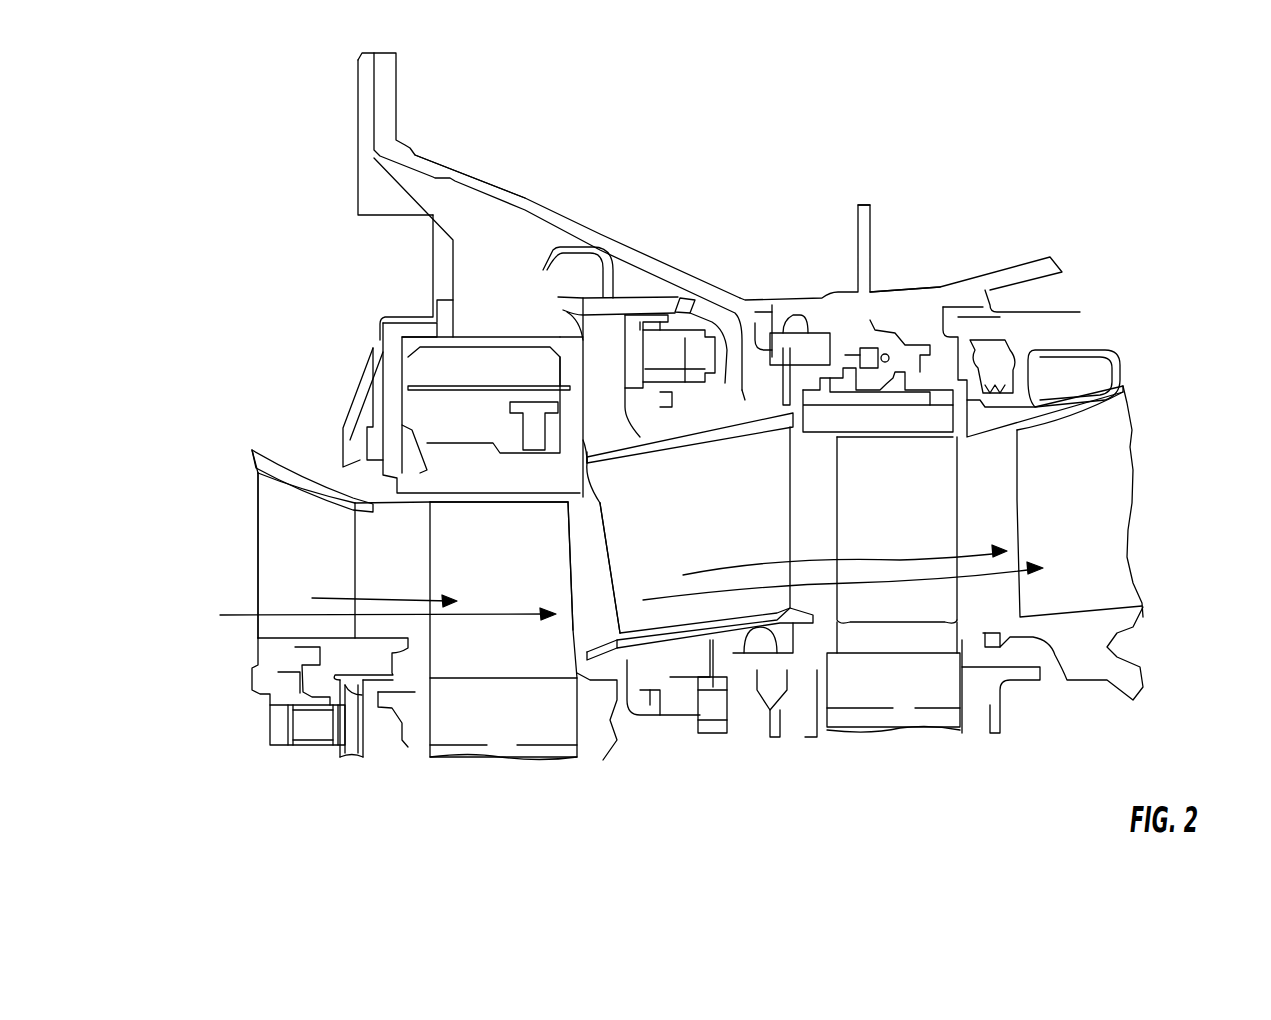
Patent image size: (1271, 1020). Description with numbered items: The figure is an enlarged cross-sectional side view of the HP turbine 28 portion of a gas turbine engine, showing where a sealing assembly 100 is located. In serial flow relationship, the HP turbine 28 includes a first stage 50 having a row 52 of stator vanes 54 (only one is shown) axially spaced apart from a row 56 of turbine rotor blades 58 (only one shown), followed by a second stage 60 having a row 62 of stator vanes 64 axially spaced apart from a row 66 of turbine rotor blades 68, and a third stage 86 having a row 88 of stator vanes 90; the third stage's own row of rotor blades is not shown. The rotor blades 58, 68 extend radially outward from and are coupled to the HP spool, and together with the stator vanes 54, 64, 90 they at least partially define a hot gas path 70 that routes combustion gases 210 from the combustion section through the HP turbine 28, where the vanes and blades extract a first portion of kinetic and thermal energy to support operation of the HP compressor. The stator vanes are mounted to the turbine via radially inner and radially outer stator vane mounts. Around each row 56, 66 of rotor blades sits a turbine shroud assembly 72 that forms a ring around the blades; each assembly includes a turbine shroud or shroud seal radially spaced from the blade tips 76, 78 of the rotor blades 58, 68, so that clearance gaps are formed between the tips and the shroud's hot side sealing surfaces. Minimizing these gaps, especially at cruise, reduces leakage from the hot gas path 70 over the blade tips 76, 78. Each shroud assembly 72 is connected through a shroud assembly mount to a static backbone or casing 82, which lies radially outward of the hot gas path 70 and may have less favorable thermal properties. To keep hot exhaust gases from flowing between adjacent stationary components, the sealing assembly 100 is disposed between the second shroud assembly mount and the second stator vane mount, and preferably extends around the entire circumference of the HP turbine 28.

The HP turbine 28 is at (790, 152).
The casing 82 is at (541, 196).
The turbine shroud assembly 72 is at (525, 326).
The sealing assembly 100 is at (360, 437).
The row of stator vanes 88 is at (1135, 430).
The blade tip 78 is at (890, 437).
The row of turbine rotor blades 66 is at (960, 540).
The stator vane 54 is at (300, 584).
The turbine rotor blade 58 is at (504, 606).
The stator vane 64 is at (714, 551).
The turbine rotor blade 68 is at (907, 551).
The stator vane 90 is at (1086, 523).
The hot gas path 70 is at (247, 613).
The combustion gases 210 is at (337, 597).
The row of turbine rotor blades 56 is at (428, 585).
The blade tip 76 is at (483, 507).
The row of stator vanes 62 is at (603, 543).
The row of stator vanes 52 is at (258, 543).
The first stage 50 is at (390, 800).
The second stage 60 is at (722, 773).
The third stage 86 is at (1047, 765).